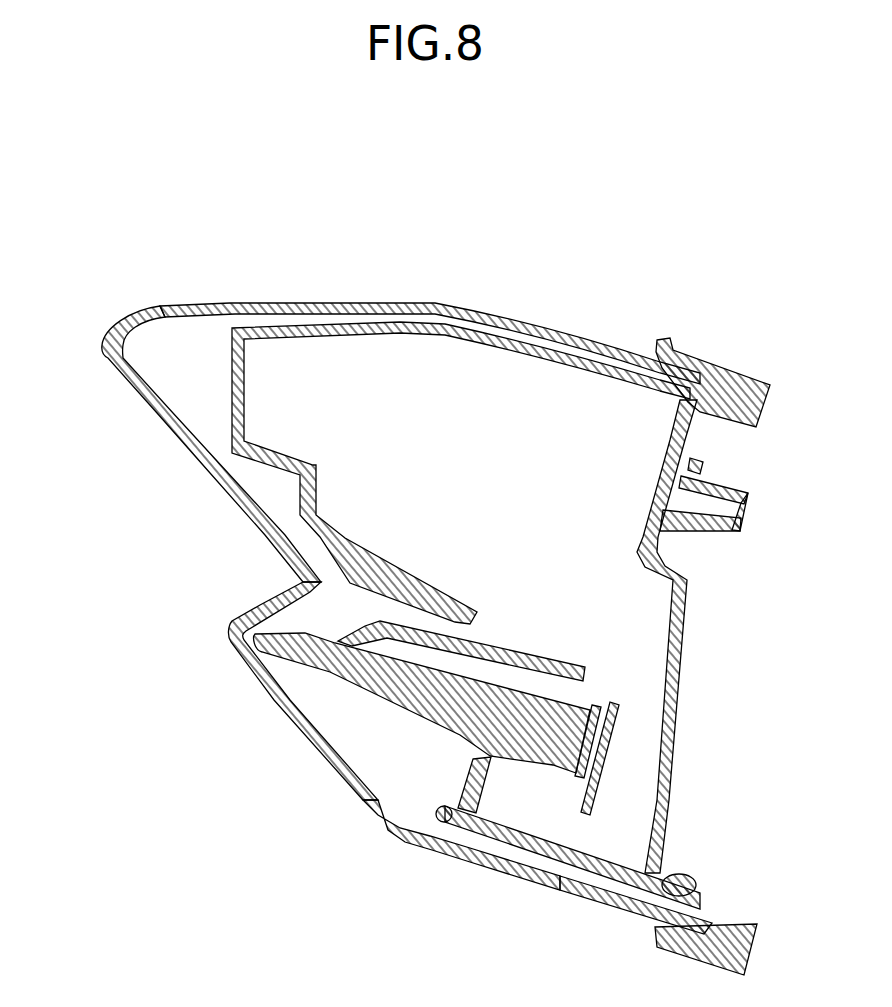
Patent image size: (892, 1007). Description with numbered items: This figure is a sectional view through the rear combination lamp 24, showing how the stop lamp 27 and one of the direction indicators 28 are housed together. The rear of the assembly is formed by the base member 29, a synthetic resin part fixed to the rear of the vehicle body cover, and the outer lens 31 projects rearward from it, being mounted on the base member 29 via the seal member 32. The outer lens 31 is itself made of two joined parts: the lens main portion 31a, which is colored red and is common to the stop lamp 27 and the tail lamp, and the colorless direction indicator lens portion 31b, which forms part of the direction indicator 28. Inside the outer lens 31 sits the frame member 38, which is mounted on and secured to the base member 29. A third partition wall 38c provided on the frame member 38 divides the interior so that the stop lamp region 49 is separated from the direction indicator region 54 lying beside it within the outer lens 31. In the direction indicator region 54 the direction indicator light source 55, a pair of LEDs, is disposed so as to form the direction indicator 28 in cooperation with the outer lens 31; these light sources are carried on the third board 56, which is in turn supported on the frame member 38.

The rear combination lamp 24 is at (536, 882).
The stop lamp 27 is at (328, 298).
The direction indicator 28 is at (383, 820).
The base member 29 is at (678, 703).
The outer lens 31 is at (523, 325).
The lens main portion 31a is at (164, 430).
The direction indicator lens portion 31b is at (292, 722).
The seal member 32 is at (743, 378).
The frame member 38 is at (440, 322).
The third partition wall 38c is at (530, 650).
The stop lamp region 49 is at (197, 383).
The direction indicator region 54 is at (422, 723).
The direction indicator light source 55 is at (597, 705).
The third board 56 is at (606, 770).